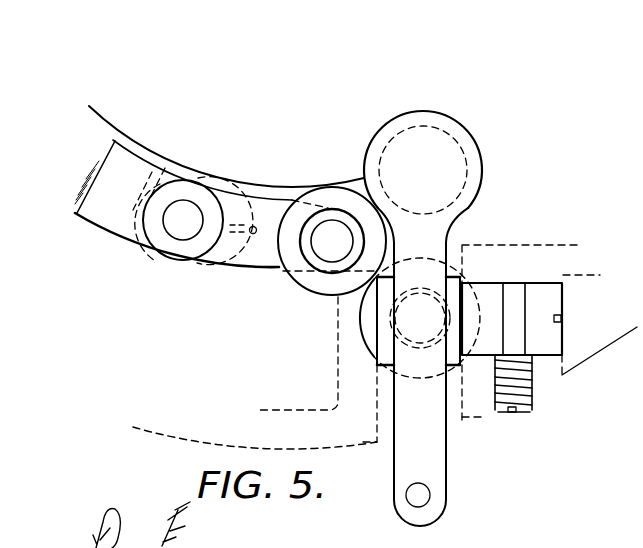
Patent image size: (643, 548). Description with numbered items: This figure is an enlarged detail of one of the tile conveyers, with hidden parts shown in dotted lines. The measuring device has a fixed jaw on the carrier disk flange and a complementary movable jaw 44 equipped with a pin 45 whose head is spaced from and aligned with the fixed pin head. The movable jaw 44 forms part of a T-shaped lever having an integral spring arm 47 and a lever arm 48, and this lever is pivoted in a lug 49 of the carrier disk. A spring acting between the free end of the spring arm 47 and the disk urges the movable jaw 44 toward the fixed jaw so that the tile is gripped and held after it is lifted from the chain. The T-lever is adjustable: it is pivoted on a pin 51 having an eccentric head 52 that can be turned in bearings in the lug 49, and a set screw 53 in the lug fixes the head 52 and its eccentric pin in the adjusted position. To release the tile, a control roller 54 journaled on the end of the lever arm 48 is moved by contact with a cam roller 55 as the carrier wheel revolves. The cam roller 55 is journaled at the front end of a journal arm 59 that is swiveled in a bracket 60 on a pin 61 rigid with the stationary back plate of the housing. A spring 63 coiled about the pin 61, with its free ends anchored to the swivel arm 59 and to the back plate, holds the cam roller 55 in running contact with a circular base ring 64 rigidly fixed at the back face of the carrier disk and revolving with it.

The movable jaw 44 is at (440, 512).
The pin 45 is at (418, 500).
The spring arm 47 is at (448, 233).
The lever arm 48 is at (347, 344).
The lug 49 is at (448, 425).
The pin 51 is at (377, 298).
The eccentric head 52 is at (548, 273).
The set screw 53 is at (535, 412).
The control roller 54 is at (380, 342).
The cam roller 55 is at (293, 274).
The journal arm 59 is at (255, 205).
The bracket 60 is at (115, 216).
The pin 61 is at (182, 228).
The spring 63 is at (188, 265).
The circular base ring 64 is at (378, 172).